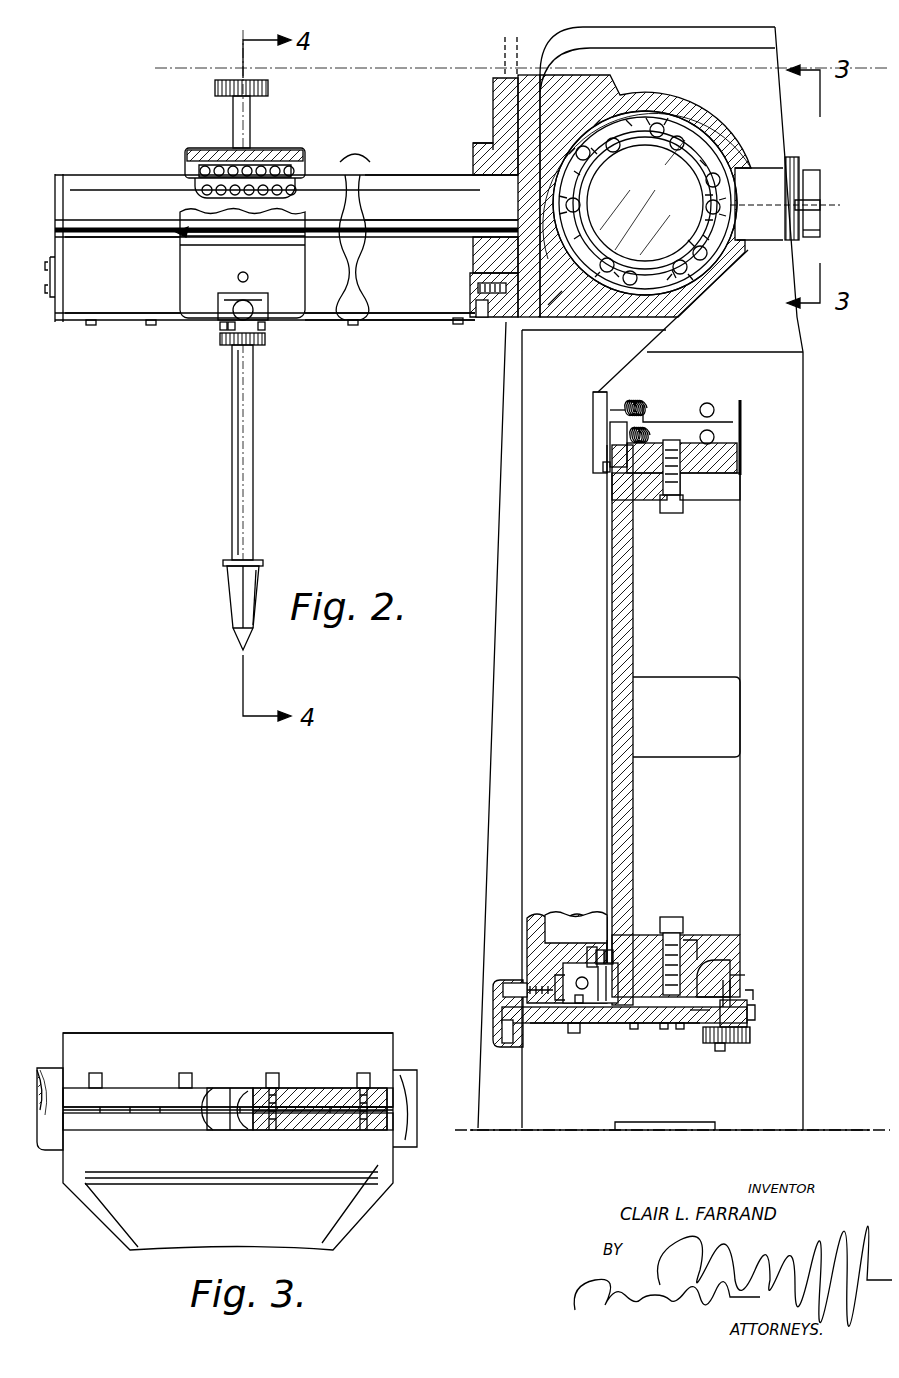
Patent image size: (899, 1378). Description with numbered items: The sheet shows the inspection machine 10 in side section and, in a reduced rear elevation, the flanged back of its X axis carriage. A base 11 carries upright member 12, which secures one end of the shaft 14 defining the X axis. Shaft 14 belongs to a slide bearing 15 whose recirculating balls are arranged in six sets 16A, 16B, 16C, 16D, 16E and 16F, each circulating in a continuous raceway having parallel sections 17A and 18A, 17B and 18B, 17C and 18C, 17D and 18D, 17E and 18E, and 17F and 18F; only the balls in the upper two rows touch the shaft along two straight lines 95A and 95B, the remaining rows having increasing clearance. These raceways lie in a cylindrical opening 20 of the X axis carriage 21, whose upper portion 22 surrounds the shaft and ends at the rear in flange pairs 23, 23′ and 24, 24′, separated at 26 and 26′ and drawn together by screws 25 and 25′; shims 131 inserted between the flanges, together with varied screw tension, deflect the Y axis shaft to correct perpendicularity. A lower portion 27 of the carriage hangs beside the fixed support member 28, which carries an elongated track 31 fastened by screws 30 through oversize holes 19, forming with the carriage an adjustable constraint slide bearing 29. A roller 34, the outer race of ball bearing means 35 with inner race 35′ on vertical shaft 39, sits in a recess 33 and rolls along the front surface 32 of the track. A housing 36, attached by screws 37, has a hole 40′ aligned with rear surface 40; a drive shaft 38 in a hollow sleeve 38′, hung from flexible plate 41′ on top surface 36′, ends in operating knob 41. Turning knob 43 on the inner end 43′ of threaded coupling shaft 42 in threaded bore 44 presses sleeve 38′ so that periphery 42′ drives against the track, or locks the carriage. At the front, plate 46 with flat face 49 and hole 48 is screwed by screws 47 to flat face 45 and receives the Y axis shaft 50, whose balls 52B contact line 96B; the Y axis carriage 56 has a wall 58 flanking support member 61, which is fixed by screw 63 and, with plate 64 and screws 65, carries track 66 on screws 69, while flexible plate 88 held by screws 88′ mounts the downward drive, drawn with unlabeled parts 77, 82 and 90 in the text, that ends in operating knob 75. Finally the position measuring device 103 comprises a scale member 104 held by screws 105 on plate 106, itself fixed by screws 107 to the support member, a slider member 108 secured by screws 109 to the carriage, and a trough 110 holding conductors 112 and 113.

In FIG. 2, the inspection machine 10 is at (470, 95).
In FIG. 2, the base 11 is at (820, 1128).
In FIG. 2, the upright member 12 is at (800, 925).
In FIG. 2, the shaft 14 is at (757, 253).
In FIG. 3, the shaft 14 is at (395, 1075).
In FIG. 2, the slide bearing 15 is at (655, 115).
In FIG. 2, the set of balls 16A is at (612, 135).
In FIG. 2, the set of balls 16B is at (680, 137).
In FIG. 2, the set of balls 16C is at (717, 178).
In FIG. 2, the set of balls 16D is at (702, 257).
In FIG. 2, the set of balls 16E is at (630, 283).
In FIG. 2, the set of balls 16F is at (565, 208).
In FIG. 2, the raceway section 17A is at (563, 153).
In FIG. 2, the raceway section 17B is at (656, 123).
In FIG. 2, the raceway section 17C is at (713, 143).
In FIG. 2, the raceway section 17D is at (668, 255).
In FIG. 2, the raceway section 17E is at (700, 325).
In FIG. 2, the raceway section 17F is at (593, 209).
In FIG. 2, the raceway section 18A is at (632, 115).
In FIG. 2, the raceway section 18B is at (681, 178).
In FIG. 2, the raceway section 18C is at (681, 219).
In FIG. 2, the raceway section 18D is at (685, 287).
In FIG. 2, the raceway section 18E is at (600, 275).
In FIG. 2, the raceway section 18F is at (573, 192).
In FIG. 2, the holes 19 is at (685, 950).
In FIG. 2, the cylindrical opening 20 is at (552, 292).
In FIG. 2, the X axis carriage 21 is at (535, 381).
In FIG. 3, the X axis carriage 21 is at (345, 1233).
In FIG. 2, the upper portion 22 is at (680, 110).
In FIG. 3, the upper portion 22 is at (275, 1015).
In FIG. 2, the upper flange 23 is at (822, 182).
In FIG. 3, the upper flange 23 is at (55, 1090).
In FIG. 2, the lower flange 23′ is at (822, 240).
In FIG. 3, the lower flange 23′ is at (65, 1145).
In FIG. 3, the upper flange 24 is at (362, 1087).
In FIG. 3, the lower flange 24′ is at (315, 1130).
In FIG. 2, the screws 25 is at (800, 158).
In FIG. 3, the screws 25 is at (185, 1073).
In FIG. 3, the screws 25′ is at (365, 1073).
In FIG. 3, the separation 26 is at (230, 1087).
In FIG. 3, the separation 26′ is at (235, 1120).
In FIG. 2, the lower portion 27 is at (530, 880).
In FIG. 2, the support member 28 is at (612, 630).
In FIG. 2, the constraint slide bearing 29 is at (670, 912).
In FIG. 2, the screws 30 is at (685, 917).
In FIG. 2, the track 31 is at (730, 970).
In FIG. 2, the front surface 32 is at (625, 1023).
In FIG. 2, the recess 33 is at (580, 963).
In FIG. 2, the roller 34 is at (565, 990).
In FIG. 2, the ball bearing means 35 is at (565, 960).
In FIG. 2, the inner race 35′ is at (590, 950).
In FIG. 2, the housing 36 is at (665, 1029).
In FIG. 2, the top surface 36′ is at (680, 1029).
In FIG. 2, the screws 37 is at (575, 1033).
In FIG. 2, the drive shaft 38 is at (747, 1010).
In FIG. 2, the hollow sleeve 38′ is at (755, 1015).
In FIG. 2, the vertical shaft 39 is at (603, 867).
In FIG. 2, the rear surface 40 is at (745, 972).
In FIG. 2, the hole 40′ is at (750, 1018).
In FIG. 2, the operating knob 41 is at (742, 1043).
In FIG. 2, the flexible plate 41′ is at (720, 955).
In FIG. 2, the threaded coupling shaft 42 is at (635, 1028).
In FIG. 2, the periphery 42′ is at (730, 1000).
In FIG. 2, the knob 43 is at (495, 1015).
In FIG. 2, the inner end 43′ is at (510, 1043).
In FIG. 2, the threaded bore 44 is at (695, 1013).
In FIG. 2, the flat face 45 is at (493, 112).
In FIG. 2, the plate 46 is at (473, 152).
In FIG. 2, the screws 47 is at (505, 45).
In FIG. 2, the hole 48 is at (473, 262).
In FIG. 2, the flat face 49 is at (548, 256).
In FIG. 2, the shaft 50 is at (160, 150).
In FIG. 3, the shaft 50 is at (195, 1120).
In FIG. 2, the set of balls 52B is at (290, 175).
In FIG. 2, the Y axis carriage 56 is at (178, 232).
In FIG. 2, the wall 58 is at (195, 283).
In FIG. 2, the support member 61 is at (122, 275).
In FIG. 2, the screw 63 is at (490, 320).
In FIG. 2, the plate 64 is at (50, 185).
In FIG. 2, the screws 65 is at (47, 320).
In FIG. 2, the track 66 is at (350, 310).
In FIG. 2, the screws 69 is at (443, 354).
In FIG. 2, the operating knob 75 is at (222, 345).
In FIG. 2, the bracket 77 is at (253, 312).
In FIG. 2, the rod 82 is at (232, 479).
In FIG. 2, the flexible plate 88 is at (222, 328).
In FIG. 2, the screws 88′ is at (264, 328).
In FIG. 2, the tip 90 is at (240, 586).
In FIG. 2, the line 95A is at (645, 203).
In FIG. 2, the line 95B is at (660, 153).
In FIG. 2, the line 96B is at (441, 197).
In FIG. 2, the position measuring device 103 is at (592, 395).
In FIG. 2, the scale member 104 is at (610, 450).
In FIG. 2, the screws 105 is at (597, 474).
In FIG. 2, the plate 106 is at (740, 458).
In FIG. 2, the screws 107 is at (680, 510).
In FIG. 2, the slider member 108 is at (593, 420).
In FIG. 2, the screws 109 is at (625, 400).
In FIG. 2, the trough 110 is at (650, 410).
In FIG. 2, the conductor 112 is at (745, 432).
In FIG. 2, the conductor 113 is at (725, 410).
In FIG. 2, the shims 131 is at (805, 205).
In FIG. 3, the shims 131 is at (360, 1120).